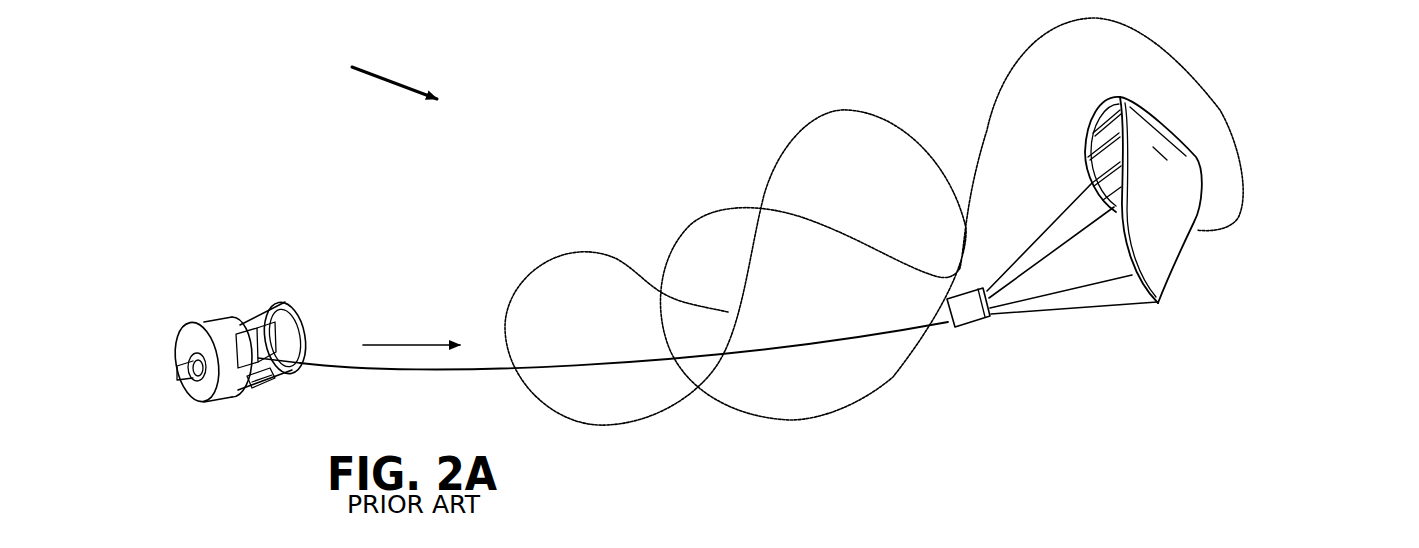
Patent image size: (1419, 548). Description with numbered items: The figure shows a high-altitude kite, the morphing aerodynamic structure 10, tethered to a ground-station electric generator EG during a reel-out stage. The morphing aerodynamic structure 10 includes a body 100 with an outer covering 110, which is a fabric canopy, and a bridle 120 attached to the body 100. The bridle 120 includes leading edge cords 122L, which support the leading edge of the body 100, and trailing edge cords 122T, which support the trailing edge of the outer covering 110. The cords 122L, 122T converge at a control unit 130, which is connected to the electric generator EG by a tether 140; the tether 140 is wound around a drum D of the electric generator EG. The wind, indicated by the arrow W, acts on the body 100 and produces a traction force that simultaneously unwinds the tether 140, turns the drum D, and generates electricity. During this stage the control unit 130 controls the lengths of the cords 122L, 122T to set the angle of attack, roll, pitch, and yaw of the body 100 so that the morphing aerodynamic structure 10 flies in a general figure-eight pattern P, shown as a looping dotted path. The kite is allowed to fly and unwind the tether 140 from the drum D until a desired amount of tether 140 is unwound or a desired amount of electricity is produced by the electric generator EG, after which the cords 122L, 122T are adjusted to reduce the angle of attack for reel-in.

The morphing aerodynamic structure 10 is at (1325, 134).
The body 100 is at (1140, 234).
The outer covering 110 is at (1185, 129).
The bridle 120 is at (1094, 277).
The leading edge cords 122L is at (1062, 209).
The trailing edge cords 122T is at (1116, 308).
The control unit 130 is at (975, 331).
The tether 140 is at (493, 369).
The figure-eight pattern P is at (727, 205).
The wind direction W is at (394, 73).
The electric generator EG is at (242, 329).
The drum D is at (280, 311).